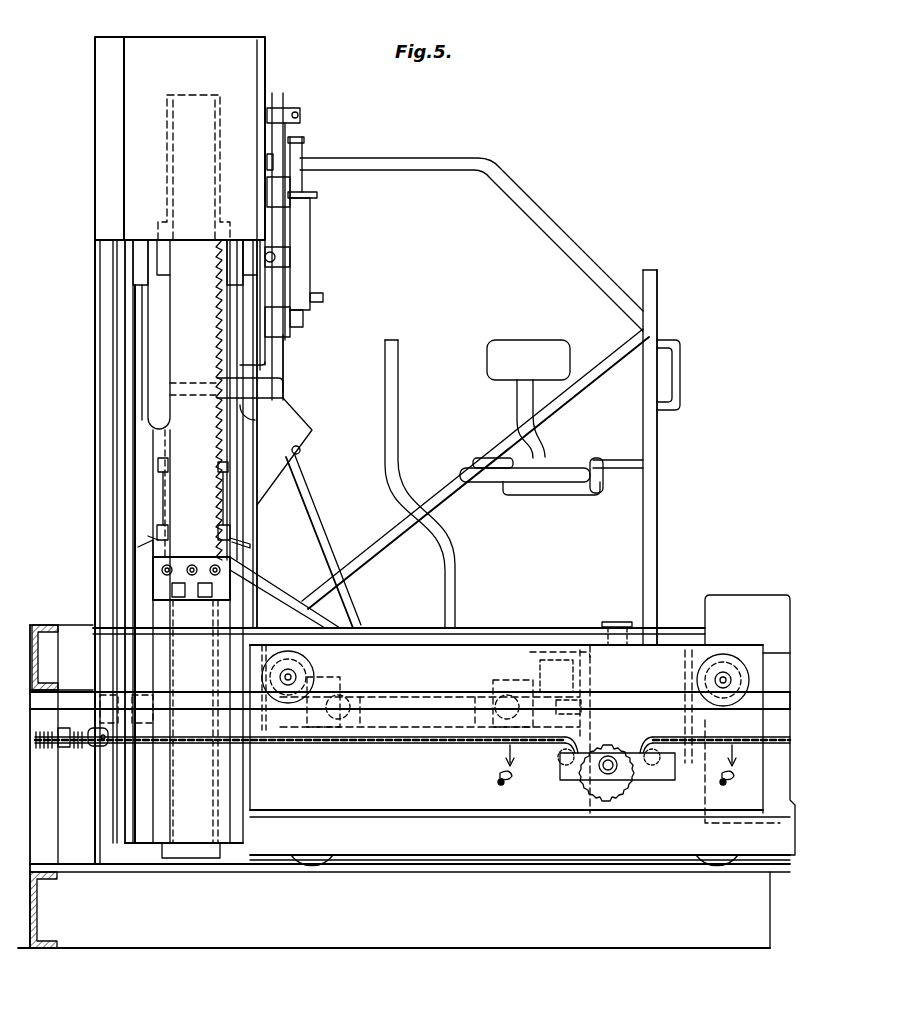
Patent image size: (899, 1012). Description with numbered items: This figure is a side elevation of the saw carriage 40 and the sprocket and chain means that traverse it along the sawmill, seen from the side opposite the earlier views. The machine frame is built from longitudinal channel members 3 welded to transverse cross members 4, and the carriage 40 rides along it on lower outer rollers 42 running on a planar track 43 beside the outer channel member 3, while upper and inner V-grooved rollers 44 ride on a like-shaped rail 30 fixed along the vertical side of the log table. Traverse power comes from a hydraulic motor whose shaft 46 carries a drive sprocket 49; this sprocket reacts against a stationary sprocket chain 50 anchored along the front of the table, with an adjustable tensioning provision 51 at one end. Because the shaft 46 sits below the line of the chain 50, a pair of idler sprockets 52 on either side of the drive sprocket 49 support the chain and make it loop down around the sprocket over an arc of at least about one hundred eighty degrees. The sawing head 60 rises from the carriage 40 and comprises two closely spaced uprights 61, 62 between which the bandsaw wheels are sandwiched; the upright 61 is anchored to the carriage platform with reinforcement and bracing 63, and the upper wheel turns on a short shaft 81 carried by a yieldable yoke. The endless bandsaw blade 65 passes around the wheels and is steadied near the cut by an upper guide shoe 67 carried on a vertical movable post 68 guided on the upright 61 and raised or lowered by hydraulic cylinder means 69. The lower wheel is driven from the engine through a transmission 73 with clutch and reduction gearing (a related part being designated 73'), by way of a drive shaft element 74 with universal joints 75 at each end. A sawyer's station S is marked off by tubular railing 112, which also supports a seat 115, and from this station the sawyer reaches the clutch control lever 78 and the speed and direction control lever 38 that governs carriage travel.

The sawing head 60 is at (95, 152).
The upper wheel shaft 81 is at (137, 245).
The upright 62 is at (127, 432).
The endless bandsaw blade 65 is at (225, 452).
The upright 61 is at (256, 524).
The upper guide shoe 67 is at (250, 386).
The vertical movable post 68 is at (292, 285).
The hydraulic cylinder means 69 is at (303, 215).
The tubular railing 112 is at (553, 220).
The speed and direction control lever 38 is at (400, 395).
The sawyer's station S is at (528, 322).
The seat 115 is at (568, 466).
The clutch control lever 78 is at (325, 515).
The reinforcement and bracing 63 is at (280, 598).
The saw carriage 40 is at (446, 860).
The cross member 4 is at (48, 618).
The longitudinal channel member 3 is at (210, 940).
The rail 30 is at (80, 700).
The V-grooved rollers 44 is at (300, 665).
The universal joints 75 is at (345, 697).
The drive shaft element 74 is at (400, 696).
The transmission case 73 is at (560, 693).
The housing part 73' is at (561, 690).
The stationary sprocket chain 50 is at (397, 745).
The chain tensioning provision 51 is at (62, 746).
The drive sprocket 49 is at (606, 748).
The motor shaft 46 is at (598, 772).
The idler sprockets 52 is at (660, 770).
The lower outer rollers 42 is at (322, 855).
The planar track 43 is at (540, 862).